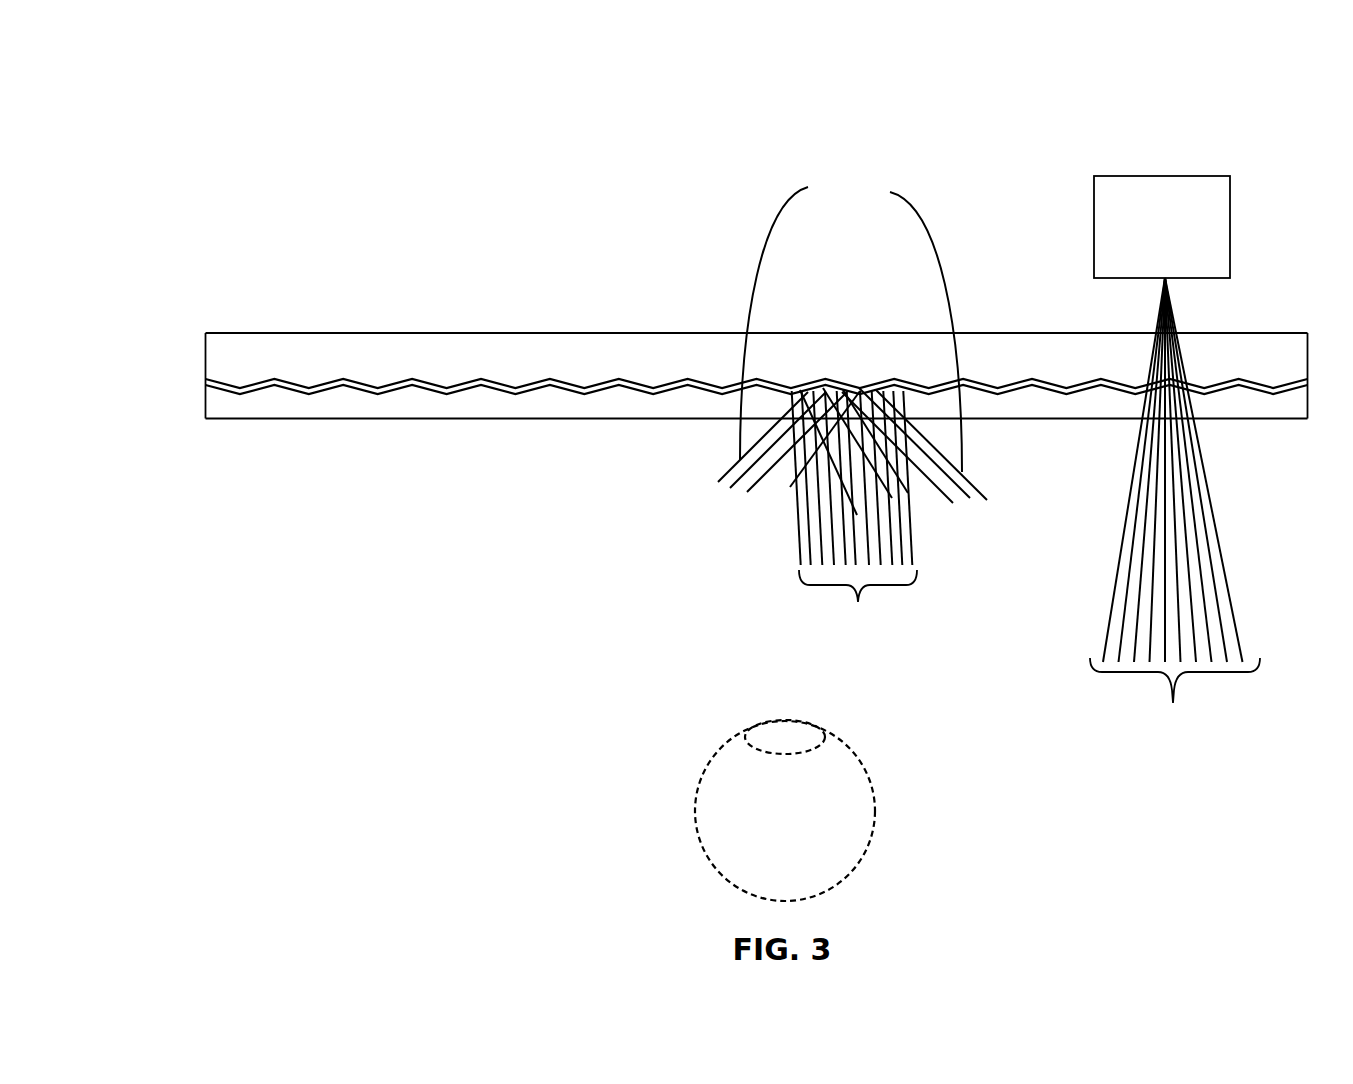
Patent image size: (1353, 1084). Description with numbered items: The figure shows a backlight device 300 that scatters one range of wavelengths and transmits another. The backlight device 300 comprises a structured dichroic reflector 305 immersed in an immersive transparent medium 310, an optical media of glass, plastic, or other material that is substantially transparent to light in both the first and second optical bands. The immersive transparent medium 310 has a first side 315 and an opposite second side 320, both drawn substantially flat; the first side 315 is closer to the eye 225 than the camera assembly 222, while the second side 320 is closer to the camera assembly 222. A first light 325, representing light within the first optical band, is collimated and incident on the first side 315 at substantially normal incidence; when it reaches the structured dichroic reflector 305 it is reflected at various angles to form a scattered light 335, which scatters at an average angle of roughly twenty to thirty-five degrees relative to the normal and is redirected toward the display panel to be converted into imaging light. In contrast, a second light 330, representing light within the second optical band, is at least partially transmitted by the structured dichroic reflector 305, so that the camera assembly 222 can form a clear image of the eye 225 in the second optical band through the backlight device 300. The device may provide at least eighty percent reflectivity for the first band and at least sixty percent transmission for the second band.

The backlight device 300 is at (146, 60).
The structured dichroic reflector 305 is at (298, 382).
The immersive transparent medium 310 is at (218, 405).
The first side 315 is at (468, 418).
The second side 320 is at (535, 333).
The first light 325 is at (852, 529).
The second light 330 is at (1175, 525).
The scattered light 335 is at (851, 301).
The camera assembly 222 is at (1144, 263).
The eye 225 is at (767, 836).